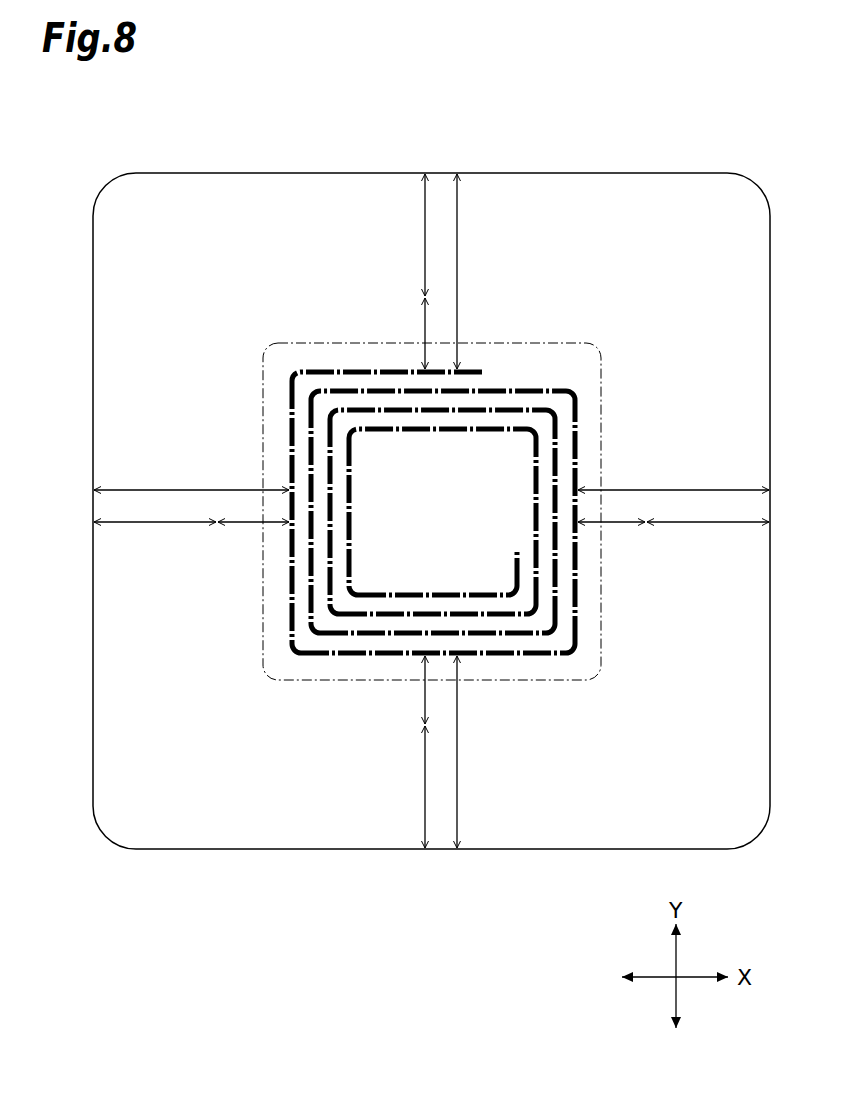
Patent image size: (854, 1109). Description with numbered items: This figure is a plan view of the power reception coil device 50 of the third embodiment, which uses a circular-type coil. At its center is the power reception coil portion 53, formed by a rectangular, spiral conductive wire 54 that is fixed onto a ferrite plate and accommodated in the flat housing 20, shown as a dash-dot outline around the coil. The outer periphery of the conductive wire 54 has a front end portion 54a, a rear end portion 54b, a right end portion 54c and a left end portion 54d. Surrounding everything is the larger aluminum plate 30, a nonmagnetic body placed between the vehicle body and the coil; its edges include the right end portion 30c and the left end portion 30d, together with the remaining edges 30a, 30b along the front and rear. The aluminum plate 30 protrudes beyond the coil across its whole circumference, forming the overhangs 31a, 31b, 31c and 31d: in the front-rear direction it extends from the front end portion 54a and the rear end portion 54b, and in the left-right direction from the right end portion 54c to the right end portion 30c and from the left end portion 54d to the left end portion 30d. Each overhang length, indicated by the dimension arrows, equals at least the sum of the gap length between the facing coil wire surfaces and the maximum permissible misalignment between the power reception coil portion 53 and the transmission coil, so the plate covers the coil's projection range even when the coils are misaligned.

The power reception coil device 50 is at (490, 139).
The aluminum plate 30 is at (672, 170).
The first side of magnetic sheet 30a is at (316, 173).
The second side of magnetic sheet 30b is at (383, 850).
The right end portion 30c is at (771, 490).
The left end portion 30d is at (93, 502).
The overhang 31a is at (358, 215).
The overhang 31b is at (490, 813).
The overhang 31c is at (733, 594).
The overhang 31d is at (133, 596).
The housing 20 is at (577, 341).
The power reception coil portion 53 is at (328, 662).
The conductive wire 54 is at (334, 363).
The front end portion 54a is at (380, 368).
The rear end portion 54b is at (541, 658).
The right end portion 54c is at (578, 576).
The left end portion 54d is at (290, 436).